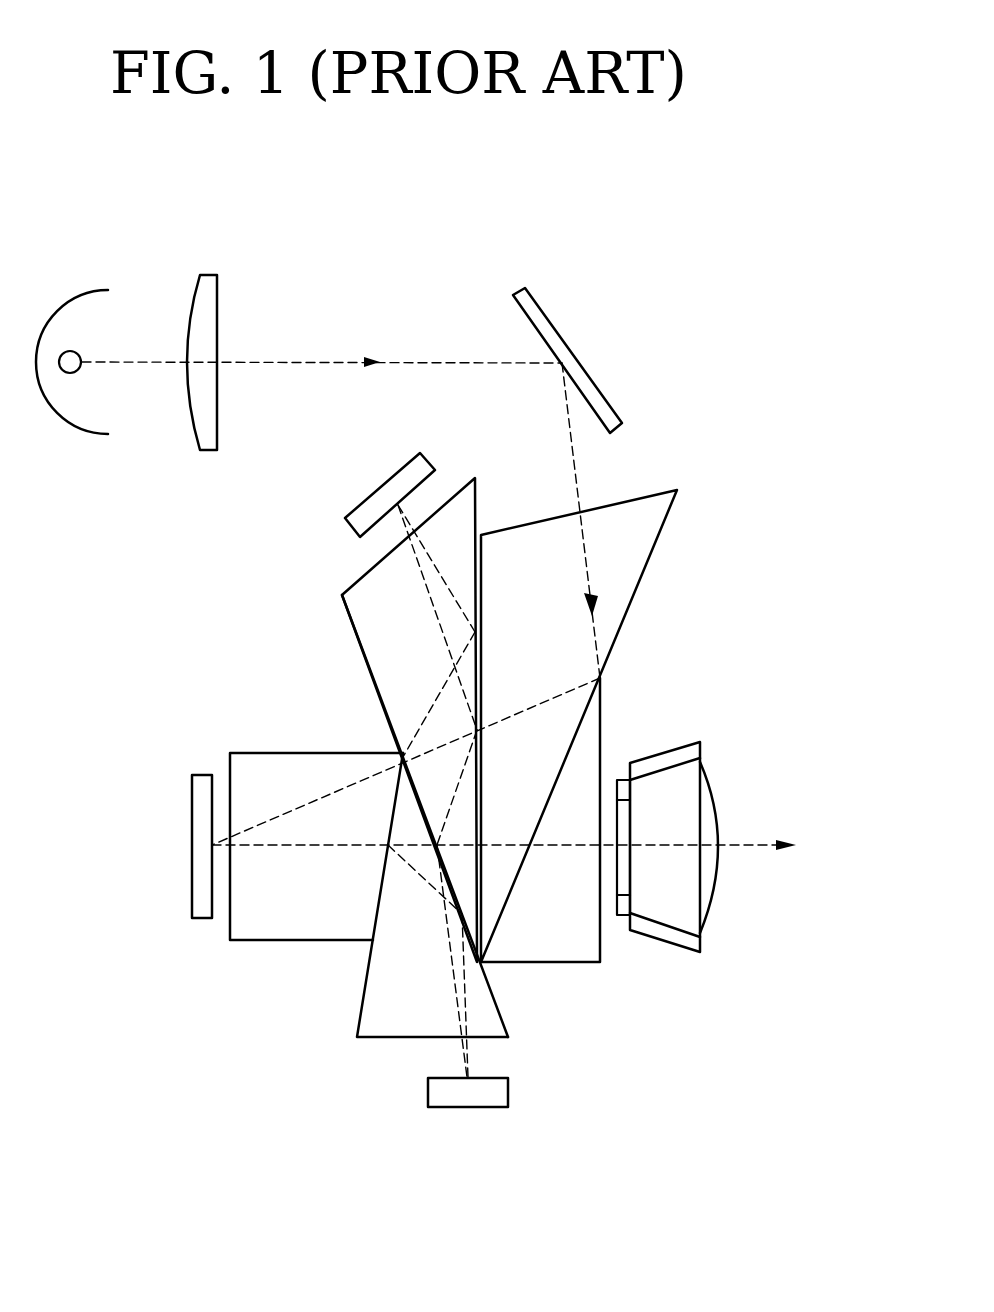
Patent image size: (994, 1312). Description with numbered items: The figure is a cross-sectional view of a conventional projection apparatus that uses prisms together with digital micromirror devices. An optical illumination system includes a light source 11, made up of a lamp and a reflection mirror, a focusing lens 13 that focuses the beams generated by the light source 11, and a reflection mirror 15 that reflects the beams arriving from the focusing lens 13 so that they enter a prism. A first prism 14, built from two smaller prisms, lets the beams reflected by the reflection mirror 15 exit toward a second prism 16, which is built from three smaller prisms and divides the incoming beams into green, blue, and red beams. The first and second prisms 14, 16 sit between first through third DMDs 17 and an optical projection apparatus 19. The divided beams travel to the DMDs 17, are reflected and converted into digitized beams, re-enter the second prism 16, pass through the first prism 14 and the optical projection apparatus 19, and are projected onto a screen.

The light source 11 is at (82, 300).
The focusing lens 13 is at (212, 275).
The first prism 14 is at (648, 570).
The reflection mirror 15 is at (556, 328).
The second prism 16 is at (362, 1000).
The first through third DMDs 17 is at (385, 490).
The optical projection apparatus 19 is at (717, 808).